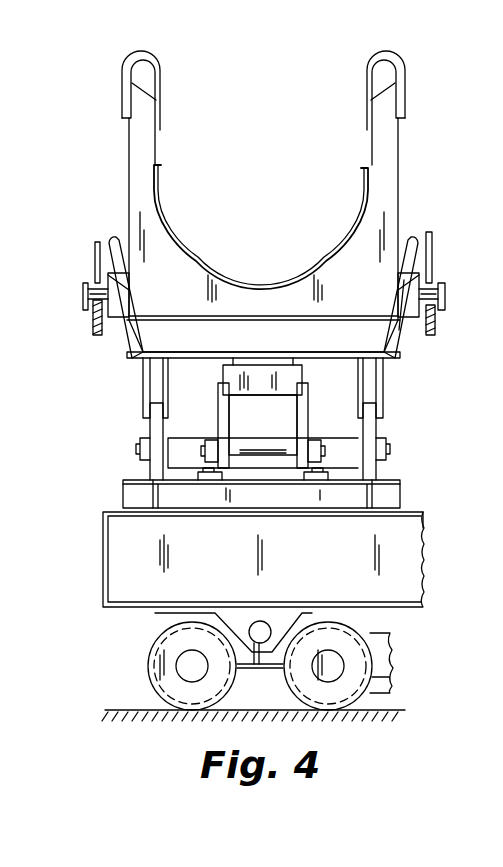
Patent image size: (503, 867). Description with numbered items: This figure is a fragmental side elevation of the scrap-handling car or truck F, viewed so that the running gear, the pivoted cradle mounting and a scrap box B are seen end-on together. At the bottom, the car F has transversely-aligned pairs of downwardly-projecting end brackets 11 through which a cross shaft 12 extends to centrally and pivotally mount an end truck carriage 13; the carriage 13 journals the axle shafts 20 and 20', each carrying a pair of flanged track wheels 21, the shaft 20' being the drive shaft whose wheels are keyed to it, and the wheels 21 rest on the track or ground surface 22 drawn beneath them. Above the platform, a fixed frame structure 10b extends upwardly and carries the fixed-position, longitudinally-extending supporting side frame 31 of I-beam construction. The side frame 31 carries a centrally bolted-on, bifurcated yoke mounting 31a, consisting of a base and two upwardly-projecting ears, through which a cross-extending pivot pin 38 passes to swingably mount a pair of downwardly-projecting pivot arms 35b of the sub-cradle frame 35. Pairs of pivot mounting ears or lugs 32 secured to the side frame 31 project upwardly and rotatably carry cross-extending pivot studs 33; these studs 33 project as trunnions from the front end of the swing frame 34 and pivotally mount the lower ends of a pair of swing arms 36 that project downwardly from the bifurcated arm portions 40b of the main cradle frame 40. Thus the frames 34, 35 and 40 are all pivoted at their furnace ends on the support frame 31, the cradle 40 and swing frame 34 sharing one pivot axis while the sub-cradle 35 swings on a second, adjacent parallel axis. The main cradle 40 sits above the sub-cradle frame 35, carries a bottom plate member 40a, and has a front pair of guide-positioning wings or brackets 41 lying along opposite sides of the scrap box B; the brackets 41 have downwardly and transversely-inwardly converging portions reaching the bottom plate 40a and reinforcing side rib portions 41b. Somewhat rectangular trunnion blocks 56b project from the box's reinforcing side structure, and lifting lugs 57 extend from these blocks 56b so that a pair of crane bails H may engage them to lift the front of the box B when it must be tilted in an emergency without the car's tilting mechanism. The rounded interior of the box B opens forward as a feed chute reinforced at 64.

The scrap box B is at (263, 185).
The reinforcement of feed chute 64 is at (323, 270).
The main cradle frame 40 is at (155, 344).
The guide-positioning wings or brackets 41 is at (112, 241).
The reinforcing side rib portions 41b is at (408, 330).
The side or trunnion blocks 56b is at (413, 283).
The lifting lugs 57 is at (83, 296).
The bail H is at (93, 327).
The bifurcated arm portions 40b is at (160, 373).
The bottom plate member 40a is at (383, 362).
The swing arms 36 is at (150, 428).
The pivot studs 33 is at (140, 450).
The pivot mounting ears or lugs 32 is at (386, 462).
The sub-cradle frame 35 is at (303, 372).
The pivot arms 35b is at (218, 412).
The pivot pin 38 is at (252, 448).
The swing frame 34 is at (340, 428).
The yoke mounting 31a is at (218, 482).
The supporting side frame 31 is at (401, 497).
The car or truck F is at (432, 550).
The fixed frame structure 10b is at (427, 527).
The end truck carriage 13 is at (165, 628).
The end brackets 11 is at (260, 678).
The cross shaft 12 is at (263, 637).
The axle shaft 20 is at (173, 666).
The flanged track wheels 21 is at (147, 663).
The drive shaft 20' is at (298, 666).
The ground 22 is at (110, 712).